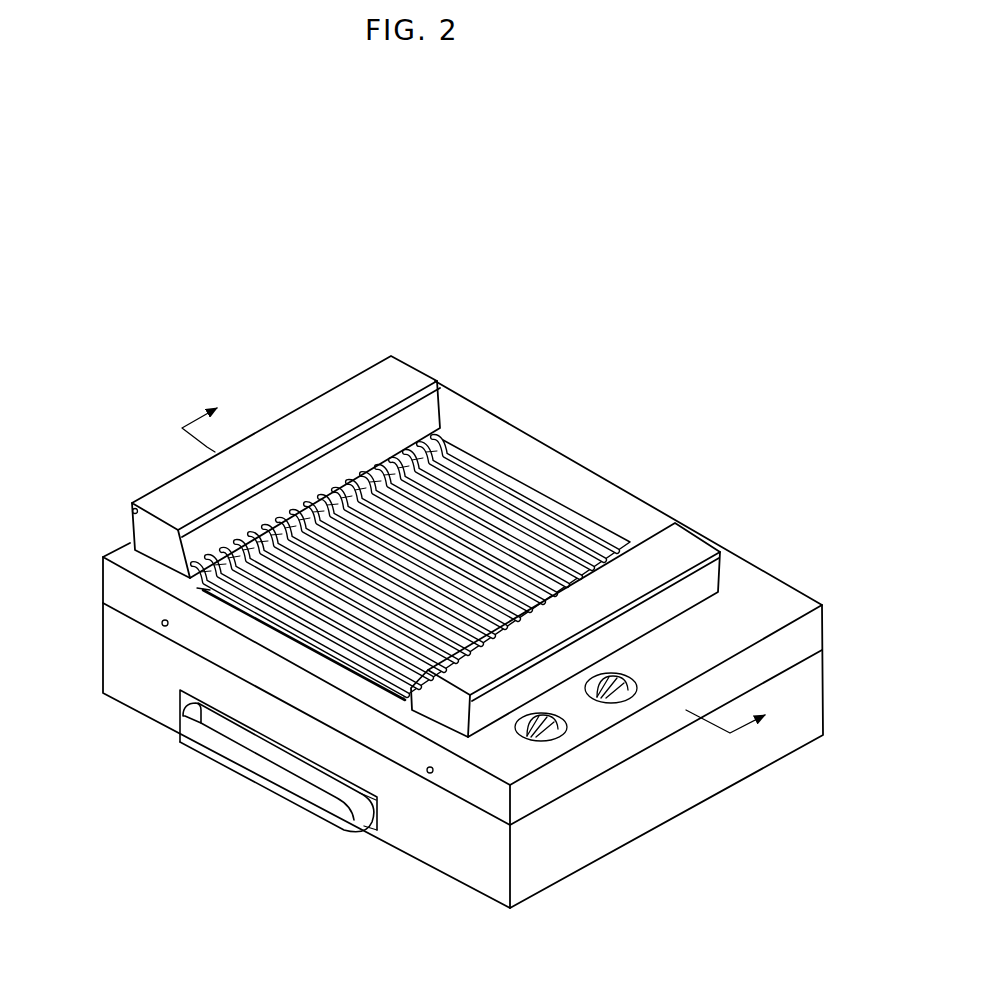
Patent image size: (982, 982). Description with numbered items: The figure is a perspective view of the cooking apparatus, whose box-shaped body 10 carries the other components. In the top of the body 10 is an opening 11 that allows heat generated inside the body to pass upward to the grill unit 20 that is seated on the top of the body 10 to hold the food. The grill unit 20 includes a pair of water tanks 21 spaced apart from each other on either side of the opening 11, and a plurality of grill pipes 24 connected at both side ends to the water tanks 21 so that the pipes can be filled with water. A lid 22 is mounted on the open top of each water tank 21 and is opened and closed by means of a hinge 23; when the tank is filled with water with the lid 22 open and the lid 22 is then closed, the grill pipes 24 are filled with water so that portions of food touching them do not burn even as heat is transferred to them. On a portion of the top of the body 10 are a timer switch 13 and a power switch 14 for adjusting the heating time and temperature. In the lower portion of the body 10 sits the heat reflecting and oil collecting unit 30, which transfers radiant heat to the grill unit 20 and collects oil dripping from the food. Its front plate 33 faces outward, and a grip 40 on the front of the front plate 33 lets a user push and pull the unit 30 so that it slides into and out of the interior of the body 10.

The body 10 is at (777, 556).
The opening 11 is at (509, 482).
The timer switch 13 is at (556, 741).
The power switch 14 is at (627, 703).
The grill unit 20 is at (543, 484).
The water tank 21 is at (146, 540).
The lid 22 is at (346, 392).
The hinge 23 is at (131, 510).
The grill pipes 24 is at (247, 610).
The heat reflecting and oil collecting unit 30 is at (188, 765).
The front plate 33 is at (364, 822).
The grip 40 is at (254, 780).